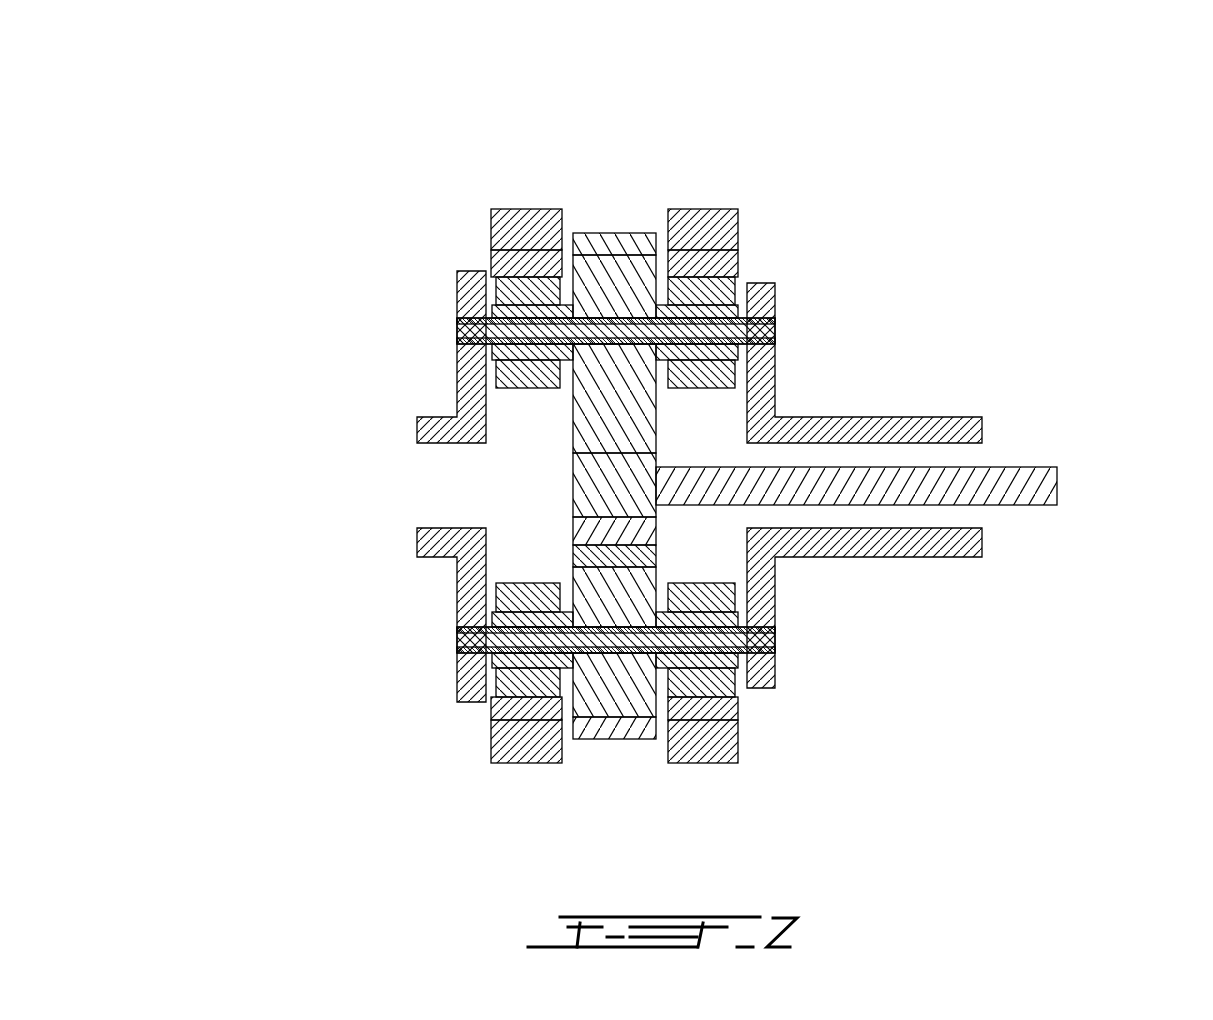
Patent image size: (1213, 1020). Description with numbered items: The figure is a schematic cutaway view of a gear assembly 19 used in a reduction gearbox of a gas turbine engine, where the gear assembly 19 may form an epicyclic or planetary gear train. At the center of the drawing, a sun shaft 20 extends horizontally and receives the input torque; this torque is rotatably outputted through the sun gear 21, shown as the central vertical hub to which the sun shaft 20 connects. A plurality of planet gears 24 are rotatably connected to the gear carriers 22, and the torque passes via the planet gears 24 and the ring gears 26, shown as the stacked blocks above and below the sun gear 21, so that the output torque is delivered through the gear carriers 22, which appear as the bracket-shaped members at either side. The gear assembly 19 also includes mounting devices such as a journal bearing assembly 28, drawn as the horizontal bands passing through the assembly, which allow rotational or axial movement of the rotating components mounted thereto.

The gear assembly 19 is at (292, 168).
The sun shaft 20 is at (1037, 478).
The sun gear 21 is at (583, 488).
The gear carriers 22 is at (775, 402).
The planet gears 24 is at (687, 667).
The ring gears 26 is at (543, 222).
The journal bearing assembly 28 is at (573, 318).